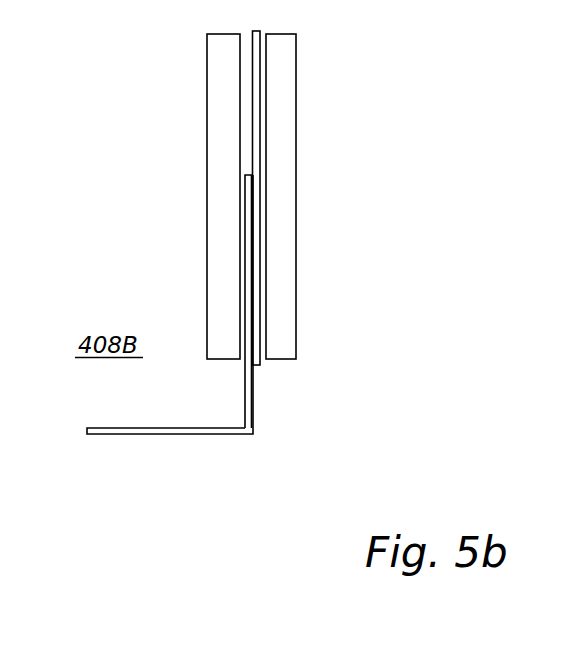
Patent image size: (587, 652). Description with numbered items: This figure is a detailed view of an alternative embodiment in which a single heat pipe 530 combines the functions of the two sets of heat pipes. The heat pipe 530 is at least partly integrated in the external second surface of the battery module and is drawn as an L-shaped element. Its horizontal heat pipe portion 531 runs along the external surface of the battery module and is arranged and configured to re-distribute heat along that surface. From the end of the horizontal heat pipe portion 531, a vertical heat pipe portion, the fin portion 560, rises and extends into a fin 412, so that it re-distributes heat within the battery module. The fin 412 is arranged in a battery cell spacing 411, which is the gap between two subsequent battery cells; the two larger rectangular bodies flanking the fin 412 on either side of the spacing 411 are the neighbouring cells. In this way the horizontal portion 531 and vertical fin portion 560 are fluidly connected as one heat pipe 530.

The battery cell spacing 411 is at (223, 257).
The fin 412 is at (260, 363).
The fin portion 560 is at (243, 220).
The horizontal heat pipe portion 531 is at (128, 434).
The heat pipe 530 is at (251, 475).